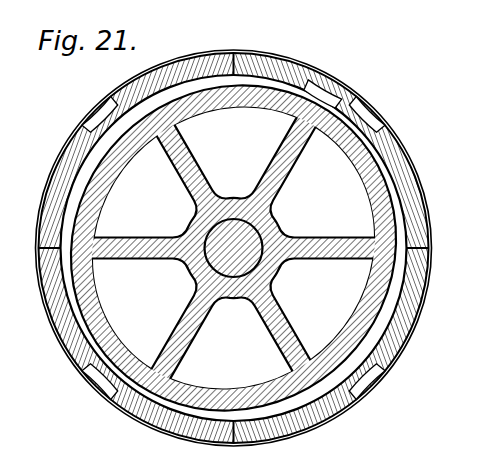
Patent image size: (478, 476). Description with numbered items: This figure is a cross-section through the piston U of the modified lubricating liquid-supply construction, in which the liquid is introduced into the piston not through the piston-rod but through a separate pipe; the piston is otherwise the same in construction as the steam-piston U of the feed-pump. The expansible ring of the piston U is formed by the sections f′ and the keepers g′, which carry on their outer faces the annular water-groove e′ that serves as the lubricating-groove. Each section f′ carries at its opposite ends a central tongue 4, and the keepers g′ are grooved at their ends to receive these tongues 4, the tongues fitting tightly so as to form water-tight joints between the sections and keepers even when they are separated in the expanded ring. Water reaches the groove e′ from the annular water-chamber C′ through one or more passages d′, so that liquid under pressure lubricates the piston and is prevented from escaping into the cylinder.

The central tongue 4 is at (66, 149).
The water-passage d′ is at (237, 54).
The section f′ is at (300, 73).
The annular water-groove e′ is at (320, 97).
The keeper g′ is at (107, 107).
The annular water-chamber C′ is at (280, 88).
The steam-piston U is at (234, 248).